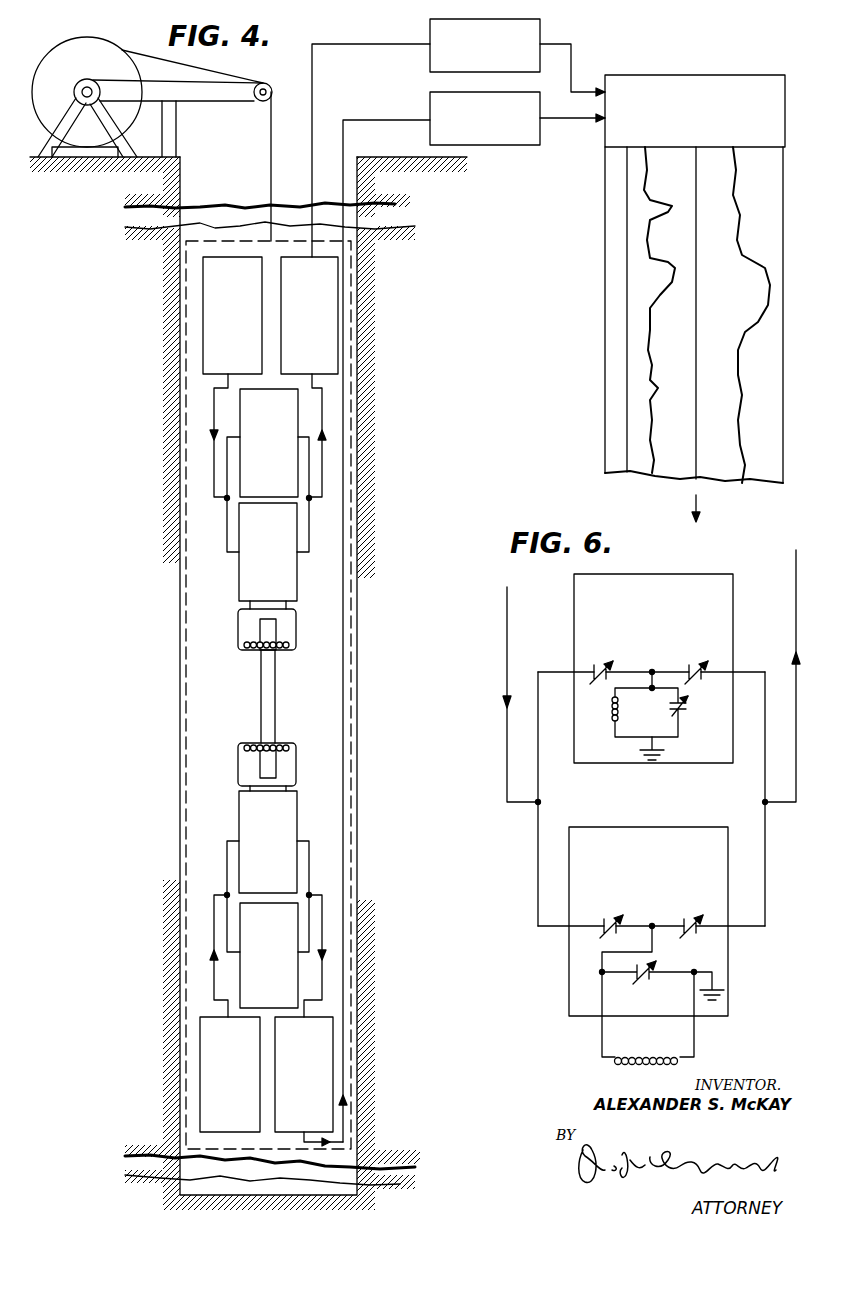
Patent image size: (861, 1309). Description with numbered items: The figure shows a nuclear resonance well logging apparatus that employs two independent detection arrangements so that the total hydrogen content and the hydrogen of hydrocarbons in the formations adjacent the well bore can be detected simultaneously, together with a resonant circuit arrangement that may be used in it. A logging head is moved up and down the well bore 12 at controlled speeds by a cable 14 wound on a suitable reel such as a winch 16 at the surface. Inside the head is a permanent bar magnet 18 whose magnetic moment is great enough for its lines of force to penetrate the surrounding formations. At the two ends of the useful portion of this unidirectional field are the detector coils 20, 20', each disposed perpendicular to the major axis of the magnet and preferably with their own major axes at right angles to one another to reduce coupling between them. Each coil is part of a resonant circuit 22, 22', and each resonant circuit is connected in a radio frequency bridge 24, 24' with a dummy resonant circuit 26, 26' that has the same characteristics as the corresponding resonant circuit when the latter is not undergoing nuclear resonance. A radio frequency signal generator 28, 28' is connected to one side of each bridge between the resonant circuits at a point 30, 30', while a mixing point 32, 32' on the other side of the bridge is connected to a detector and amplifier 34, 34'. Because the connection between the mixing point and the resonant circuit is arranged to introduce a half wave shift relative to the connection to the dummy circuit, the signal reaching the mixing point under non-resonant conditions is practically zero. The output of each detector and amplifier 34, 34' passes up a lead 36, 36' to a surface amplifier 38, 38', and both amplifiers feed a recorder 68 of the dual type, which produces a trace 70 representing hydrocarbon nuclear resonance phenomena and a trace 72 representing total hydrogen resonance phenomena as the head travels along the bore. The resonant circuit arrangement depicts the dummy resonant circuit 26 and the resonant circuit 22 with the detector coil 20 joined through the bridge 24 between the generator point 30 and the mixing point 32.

In FIG. 4, the well bore 12 is at (358, 262).
In FIG. 4, the cable 14 is at (270, 187).
In FIG. 4, the winch 16 is at (70, 52).
In FIG. 4, the permanent bar magnet 18 is at (261, 697).
In FIG. 4, the detector coil 20 is at (326, 625).
In FIG. 6, the detector coil 20 is at (648, 1018).
In FIG. 4, the detector coil 20' is at (198, 766).
In FIG. 4, the resonant circuit 22 is at (288, 552).
In FIG. 6, the resonant circuit 22 is at (651, 921).
In FIG. 4, the resonant circuit 22' is at (200, 842).
In FIG. 4, the radio frequency bridge 24 is at (268, 694).
In FIG. 6, the radio frequency bridge 24 is at (651, 799).
In FIG. 4, the radio frequency bridge 24' is at (269, 855).
In FIG. 4, the dummy resonant circuit 26 is at (327, 443).
In FIG. 6, the dummy resonant circuit 26 is at (651, 668).
In FIG. 4, the dummy resonant circuit 26' is at (331, 955).
In FIG. 4, the radio frequency signal generator 28 is at (193, 315).
In FIG. 4, the radio frequency signal generator 28' is at (183, 1074).
In FIG. 4, the point 30 is at (175, 512).
In FIG. 6, the point 30 is at (517, 707).
In FIG. 4, the point 30' is at (167, 898).
In FIG. 4, the mixing point 32 is at (361, 514).
In FIG. 6, the mixing point 32 is at (786, 691).
In FIG. 4, the mixing point 32' is at (365, 898).
In FIG. 4, the detector and amplifier 34 is at (352, 315).
In FIG. 4, the detector and amplifier 34' is at (350, 1081).
In FIG. 4, the lead 36 is at (273, 215).
In FIG. 4, the lead 36' is at (276, 235).
In FIG. 4, the amplifier 38 is at (517, 56).
In FIG. 4, the amplifier 38' is at (491, 116).
In FIG. 4, the recorder 68 is at (706, 75).
In FIG. 4, the trace 70 is at (650, 305).
In FIG. 4, the trace 72 is at (757, 325).